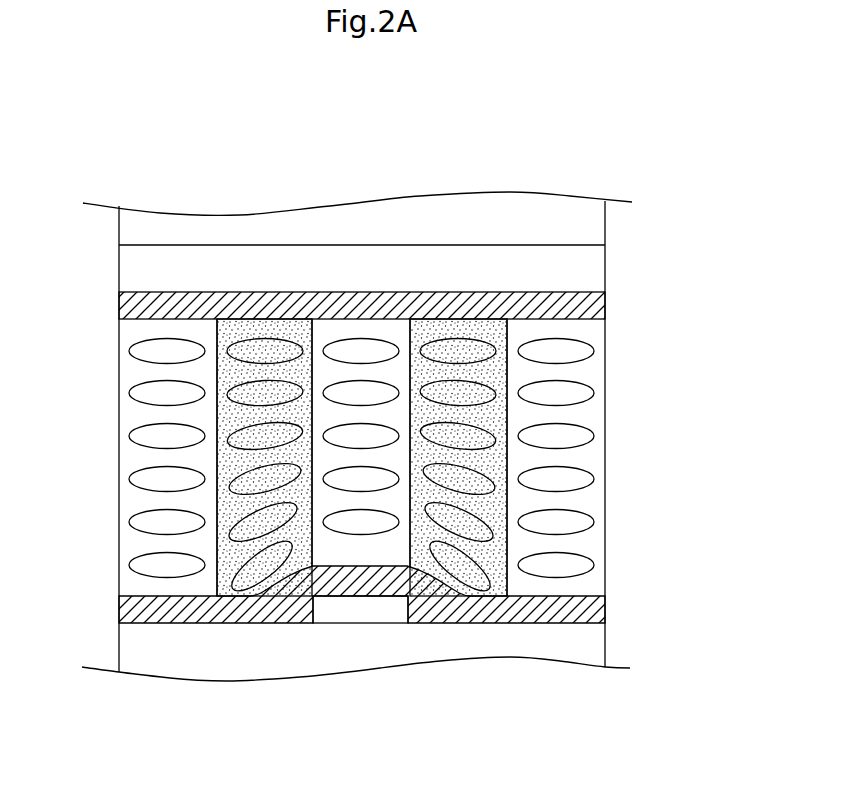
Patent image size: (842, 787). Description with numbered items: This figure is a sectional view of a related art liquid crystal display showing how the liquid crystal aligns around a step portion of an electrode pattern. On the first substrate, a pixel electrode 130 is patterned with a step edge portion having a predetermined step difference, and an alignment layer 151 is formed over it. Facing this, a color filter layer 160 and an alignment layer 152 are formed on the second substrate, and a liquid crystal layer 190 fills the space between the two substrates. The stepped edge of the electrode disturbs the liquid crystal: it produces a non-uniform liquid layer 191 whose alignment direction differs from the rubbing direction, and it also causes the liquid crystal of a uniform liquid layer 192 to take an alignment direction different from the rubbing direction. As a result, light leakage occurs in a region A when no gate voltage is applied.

The color filter layer 160 is at (583, 268).
The alignment layer 152 is at (583, 305).
The alignment layer 151 is at (583, 607).
The pixel electrode 130 is at (357, 610).
The liquid crystal layer 190 is at (677, 400).
The non-uniform liquid layer 191 is at (616, 465).
The uniform liquid layer 192 is at (616, 338).
The region A is at (462, 377).